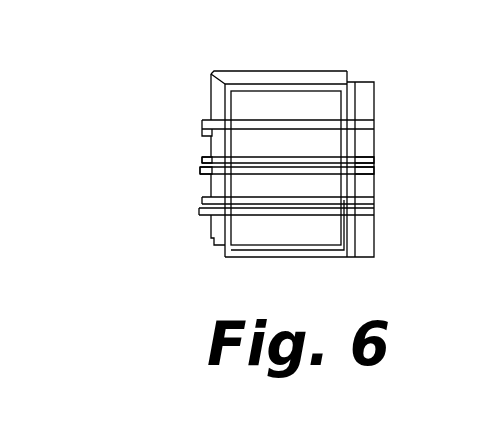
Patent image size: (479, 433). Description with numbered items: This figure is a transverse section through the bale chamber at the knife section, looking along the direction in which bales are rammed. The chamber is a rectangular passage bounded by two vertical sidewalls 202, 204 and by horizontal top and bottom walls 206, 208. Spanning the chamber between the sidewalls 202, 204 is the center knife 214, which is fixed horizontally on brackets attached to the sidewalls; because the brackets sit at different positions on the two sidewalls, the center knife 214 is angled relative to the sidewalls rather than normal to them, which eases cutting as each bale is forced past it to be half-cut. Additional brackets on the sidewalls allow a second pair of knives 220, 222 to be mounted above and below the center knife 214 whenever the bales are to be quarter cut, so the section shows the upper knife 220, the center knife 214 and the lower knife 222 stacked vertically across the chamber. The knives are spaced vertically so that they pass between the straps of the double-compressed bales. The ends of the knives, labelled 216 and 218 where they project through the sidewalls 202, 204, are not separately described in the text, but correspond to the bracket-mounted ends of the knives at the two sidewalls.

The sidewall 202 is at (345, 97).
The sidewall 204 is at (237, 222).
The top wall 206 is at (261, 83).
The bottom wall 208 is at (298, 258).
The center knife 214 is at (247, 158).
The rod ends 216 is at (199, 173).
The rod ends 218 is at (376, 173).
The second knife 220 is at (252, 120).
The second knife 222 is at (259, 202).